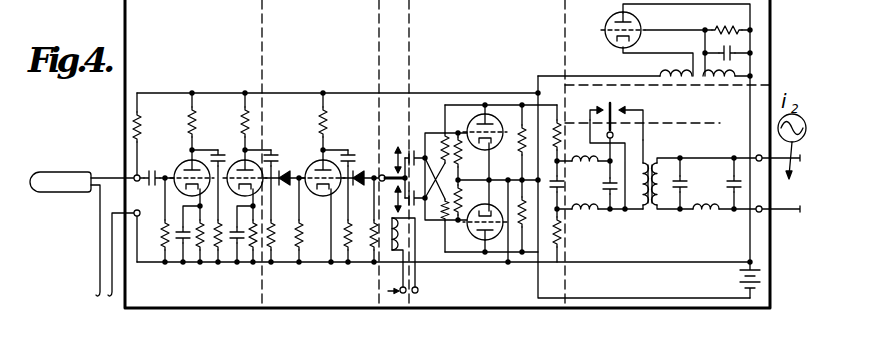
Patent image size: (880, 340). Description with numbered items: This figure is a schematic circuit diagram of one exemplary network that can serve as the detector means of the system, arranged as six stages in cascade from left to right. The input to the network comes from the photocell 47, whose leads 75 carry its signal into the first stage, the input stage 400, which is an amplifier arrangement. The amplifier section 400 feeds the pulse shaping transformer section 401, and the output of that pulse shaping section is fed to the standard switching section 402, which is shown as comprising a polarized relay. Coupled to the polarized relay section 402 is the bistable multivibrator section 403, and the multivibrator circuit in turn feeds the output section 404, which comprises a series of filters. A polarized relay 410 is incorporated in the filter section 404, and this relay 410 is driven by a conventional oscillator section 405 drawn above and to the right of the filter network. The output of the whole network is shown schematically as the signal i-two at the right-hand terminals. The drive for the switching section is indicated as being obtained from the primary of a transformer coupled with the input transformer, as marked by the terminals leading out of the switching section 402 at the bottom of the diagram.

The photocell 47 is at (73, 161).
The input leads 75 is at (100, 276).
The input stage 400 is at (203, 57).
The pulse shaping transformer section 401 is at (331, 57).
The switching section 402 is at (390, 20).
The bistable multivibrator section 403 is at (497, 57).
The output section 404 is at (648, 284).
The oscillator section 405 is at (577, 19).
The polarized relay 410 is at (620, 136).